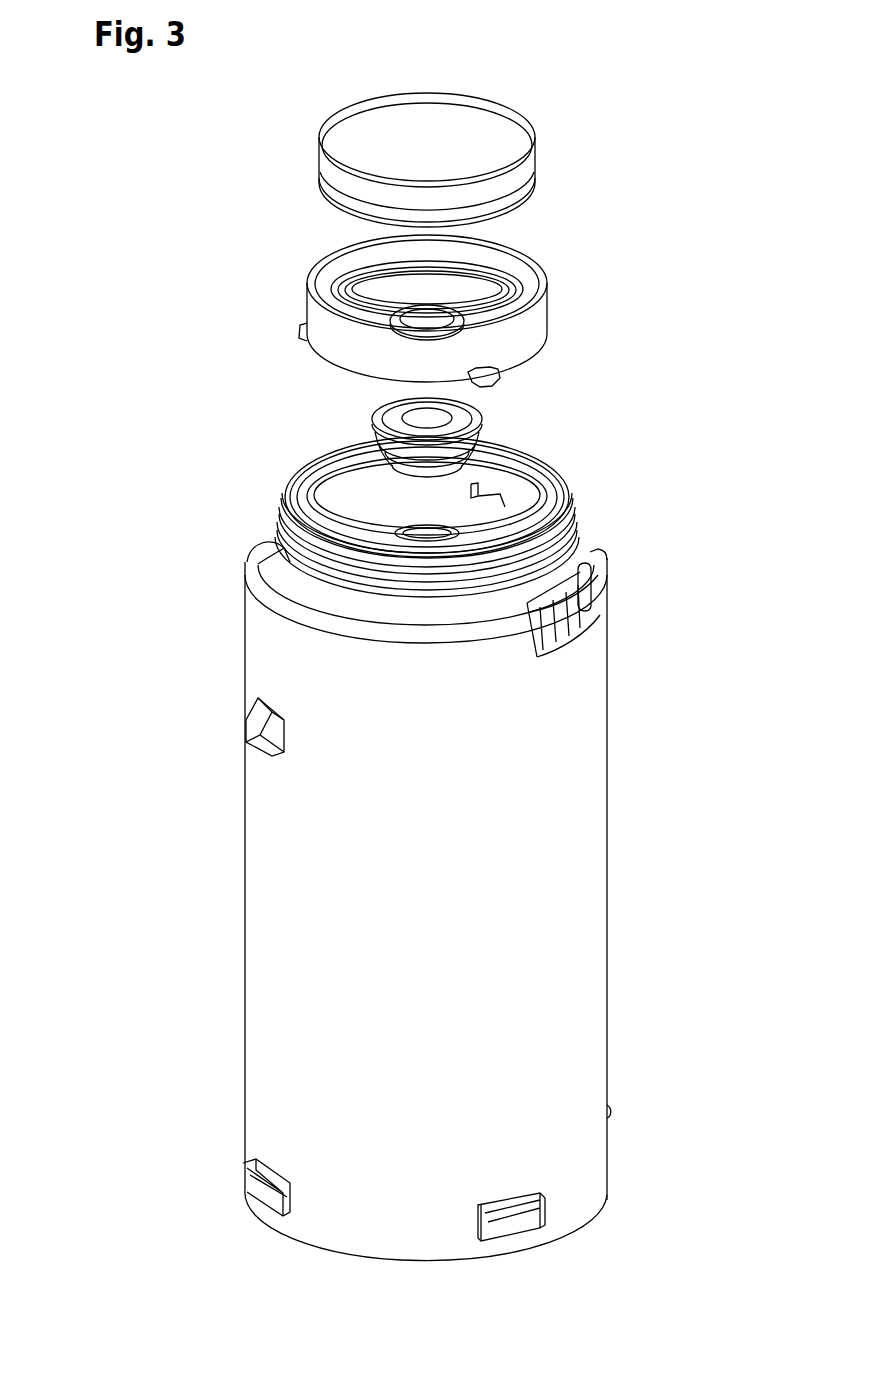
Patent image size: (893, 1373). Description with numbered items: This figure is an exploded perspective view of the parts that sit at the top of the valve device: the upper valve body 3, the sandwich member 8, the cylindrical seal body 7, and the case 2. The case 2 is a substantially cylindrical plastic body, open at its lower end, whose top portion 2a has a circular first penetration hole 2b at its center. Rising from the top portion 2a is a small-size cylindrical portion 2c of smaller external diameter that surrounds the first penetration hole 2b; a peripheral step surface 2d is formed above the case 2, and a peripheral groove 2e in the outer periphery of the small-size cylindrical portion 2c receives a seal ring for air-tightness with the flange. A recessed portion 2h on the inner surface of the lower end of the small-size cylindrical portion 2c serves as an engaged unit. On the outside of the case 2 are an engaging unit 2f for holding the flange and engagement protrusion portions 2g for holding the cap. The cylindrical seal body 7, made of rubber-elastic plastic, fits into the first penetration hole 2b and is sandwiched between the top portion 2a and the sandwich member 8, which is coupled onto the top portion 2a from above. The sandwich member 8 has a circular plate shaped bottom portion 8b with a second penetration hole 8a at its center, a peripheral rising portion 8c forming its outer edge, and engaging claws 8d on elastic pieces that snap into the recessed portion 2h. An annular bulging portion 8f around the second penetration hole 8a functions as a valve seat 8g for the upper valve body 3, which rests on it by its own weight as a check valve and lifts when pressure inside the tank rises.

The case 2 is at (282, 920).
The top portion 2a is at (370, 512).
The first penetration hole 2b is at (428, 542).
The small-size cylindrical portion 2c is at (533, 475).
The peripheral step surface 2d is at (575, 548).
The peripheral groove 2e is at (282, 550).
The engaging unit 2f is at (245, 735).
The engagement protrusion portion 2g is at (245, 1166).
The recessed portion 2h is at (497, 485).
The upper valve body 3 is at (468, 114).
The cylindrical seal body 7 is at (375, 422).
The sandwich member 8 is at (548, 313).
The second penetration hole 8a is at (432, 316).
The circular plate shaped bottom portion 8b is at (480, 310).
The peripheral rising portion 8c is at (318, 284).
The engaging claw 8d is at (300, 333).
The annular bulging portion 8f is at (395, 312).
The valve seat 8g is at (427, 289).